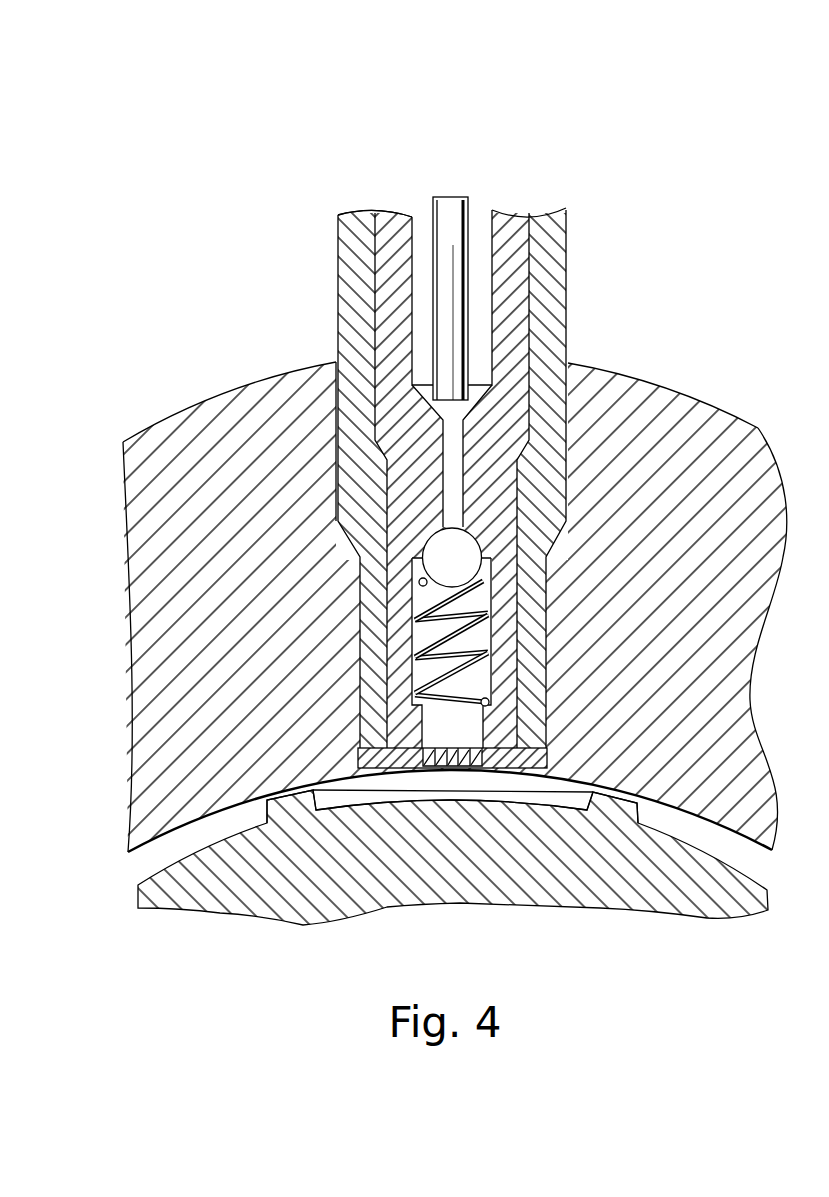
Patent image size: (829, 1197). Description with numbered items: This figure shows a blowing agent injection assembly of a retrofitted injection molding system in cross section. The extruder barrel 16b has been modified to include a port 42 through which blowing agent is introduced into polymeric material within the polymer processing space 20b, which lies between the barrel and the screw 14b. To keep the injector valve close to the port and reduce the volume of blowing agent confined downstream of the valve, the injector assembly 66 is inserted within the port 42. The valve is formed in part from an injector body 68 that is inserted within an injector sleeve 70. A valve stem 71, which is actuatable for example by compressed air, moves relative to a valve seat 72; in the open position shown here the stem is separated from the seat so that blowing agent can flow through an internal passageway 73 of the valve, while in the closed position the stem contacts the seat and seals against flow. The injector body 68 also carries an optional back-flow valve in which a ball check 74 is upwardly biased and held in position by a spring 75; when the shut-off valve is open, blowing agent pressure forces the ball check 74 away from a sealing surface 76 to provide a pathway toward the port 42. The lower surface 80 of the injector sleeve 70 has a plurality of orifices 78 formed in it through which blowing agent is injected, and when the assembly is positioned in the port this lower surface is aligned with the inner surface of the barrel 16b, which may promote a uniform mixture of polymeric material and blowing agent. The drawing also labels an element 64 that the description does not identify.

The screw 14b is at (143, 883).
The barrel 16b is at (243, 390).
The polymer processing space 20b is at (157, 849).
The port 42 is at (336, 362).
The sleeve 64 is at (402, 233).
The injector assembly 66 is at (511, 63).
The injector body 68 is at (481, 217).
The injector sleeve 70 is at (546, 212).
The valve stem 71 is at (447, 198).
The valve seat 72 is at (424, 377).
The internal passageway 73 is at (495, 307).
The ball check 74 is at (427, 531).
The spring 75 is at (495, 615).
The sealing surface 76 is at (419, 538).
The orifices 78 is at (423, 758).
The lower surface 80 is at (548, 757).